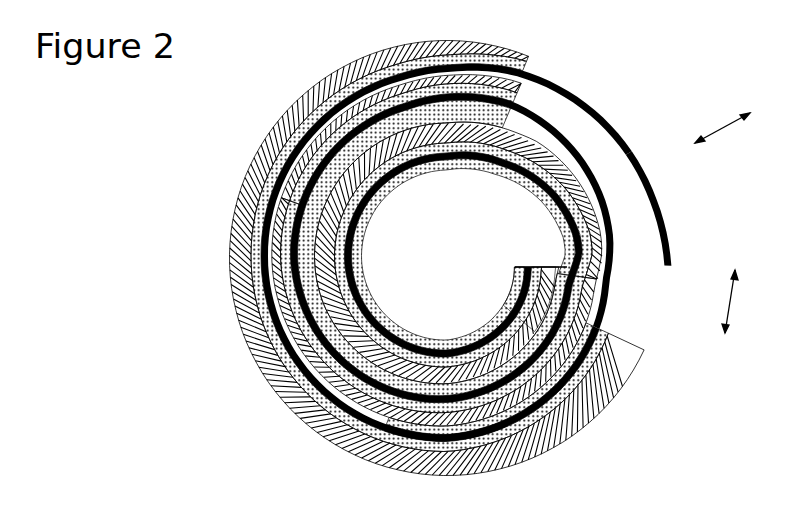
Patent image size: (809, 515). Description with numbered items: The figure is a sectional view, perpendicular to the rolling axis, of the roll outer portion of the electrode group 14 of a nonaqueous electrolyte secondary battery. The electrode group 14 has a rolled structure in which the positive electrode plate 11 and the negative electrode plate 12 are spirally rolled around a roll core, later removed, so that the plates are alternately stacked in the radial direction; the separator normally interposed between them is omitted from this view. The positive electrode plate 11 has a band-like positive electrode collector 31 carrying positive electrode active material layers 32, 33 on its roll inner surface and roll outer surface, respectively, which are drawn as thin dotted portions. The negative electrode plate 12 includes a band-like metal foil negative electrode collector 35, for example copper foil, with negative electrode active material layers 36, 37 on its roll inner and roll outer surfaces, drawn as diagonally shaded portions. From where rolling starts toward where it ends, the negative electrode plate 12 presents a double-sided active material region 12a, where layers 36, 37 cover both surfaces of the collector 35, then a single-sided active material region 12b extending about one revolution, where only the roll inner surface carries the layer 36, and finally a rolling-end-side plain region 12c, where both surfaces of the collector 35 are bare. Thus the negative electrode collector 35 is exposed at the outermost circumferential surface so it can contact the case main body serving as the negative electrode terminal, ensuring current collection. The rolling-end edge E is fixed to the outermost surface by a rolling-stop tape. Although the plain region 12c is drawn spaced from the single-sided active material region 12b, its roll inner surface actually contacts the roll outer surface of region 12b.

The positive electrode plate 11 is at (496, 412).
The negative electrode plate 12 is at (553, 405).
The double-sided active material region 12a is at (548, 266).
The single-sided active material region 12b is at (616, 192).
The rolling-end-side plain region 12c is at (660, 237).
The electrode group 14 is at (453, 257).
The positive electrode collector 31 is at (270, 203).
The positive electrode active material layer 32 is at (362, 262).
The positive electrode active material layer 33 is at (265, 229).
The negative electrode collector 35 is at (440, 447).
The negative electrode active material layer 36 is at (505, 65).
The negative electrode active material layer 37 is at (487, 140).
The rolling-end edge E is at (668, 269).